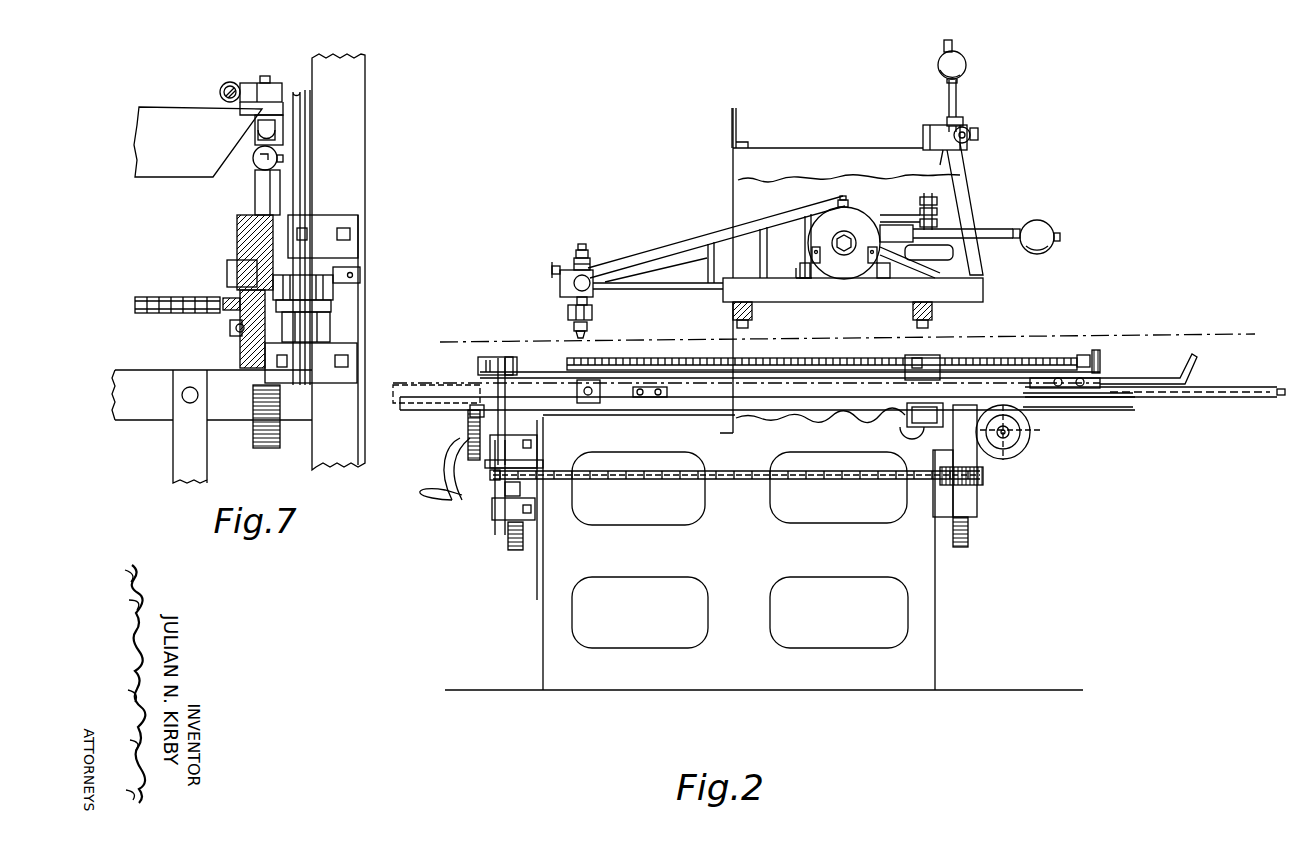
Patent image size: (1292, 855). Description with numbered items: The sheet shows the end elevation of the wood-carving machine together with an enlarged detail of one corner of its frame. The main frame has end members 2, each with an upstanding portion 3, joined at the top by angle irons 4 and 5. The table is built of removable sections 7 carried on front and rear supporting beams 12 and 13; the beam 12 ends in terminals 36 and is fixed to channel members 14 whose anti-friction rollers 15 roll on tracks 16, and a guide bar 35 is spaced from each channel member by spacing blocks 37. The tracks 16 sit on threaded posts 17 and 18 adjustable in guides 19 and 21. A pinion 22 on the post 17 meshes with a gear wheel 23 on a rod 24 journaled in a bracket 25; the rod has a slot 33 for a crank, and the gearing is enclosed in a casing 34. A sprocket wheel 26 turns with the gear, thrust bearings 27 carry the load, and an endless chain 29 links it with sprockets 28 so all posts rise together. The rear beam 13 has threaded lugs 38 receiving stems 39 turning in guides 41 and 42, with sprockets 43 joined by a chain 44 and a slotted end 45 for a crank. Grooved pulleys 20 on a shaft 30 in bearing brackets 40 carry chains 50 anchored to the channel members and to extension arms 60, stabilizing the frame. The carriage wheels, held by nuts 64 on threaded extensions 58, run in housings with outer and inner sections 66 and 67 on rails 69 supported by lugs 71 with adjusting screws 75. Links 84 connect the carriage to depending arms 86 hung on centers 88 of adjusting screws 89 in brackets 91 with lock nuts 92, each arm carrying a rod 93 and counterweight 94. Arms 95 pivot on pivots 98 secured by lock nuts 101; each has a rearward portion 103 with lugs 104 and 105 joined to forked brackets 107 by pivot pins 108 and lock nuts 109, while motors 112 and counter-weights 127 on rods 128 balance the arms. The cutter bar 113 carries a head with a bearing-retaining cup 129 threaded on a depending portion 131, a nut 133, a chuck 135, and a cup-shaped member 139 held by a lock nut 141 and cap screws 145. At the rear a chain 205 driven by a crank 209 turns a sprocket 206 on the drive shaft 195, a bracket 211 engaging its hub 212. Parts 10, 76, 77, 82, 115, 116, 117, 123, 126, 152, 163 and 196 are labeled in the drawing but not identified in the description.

In FIG. 7, the end member 2 is at (353, 167).
In FIG. 2, the end member 2 is at (922, 565).
In FIG. 2, the upstanding portion 3 is at (730, 182).
In FIG. 2, the angle iron 4 is at (450, 318).
In FIG. 2, the angle iron 5 is at (923, 133).
In FIG. 2, the removable table section 7 is at (474, 359).
In FIG. 2, the bar 10 is at (670, 394).
In FIG. 7, the front supporting beam 12 is at (177, 167).
In FIG. 2, the front supporting beam 12 is at (487, 417).
In FIG. 2, the rear supporting beam 13 is at (907, 420).
In FIG. 7, the channel member 14 is at (280, 127).
In FIG. 2, the channel member 14 is at (557, 383).
In FIG. 7, the anti-friction roller 15 is at (258, 133).
In FIG. 2, the anti-friction roller 15 is at (553, 398).
In FIG. 7, the track 16 is at (257, 160).
In FIG. 7, the post 17 is at (257, 190).
In FIG. 2, the post 17 is at (508, 543).
In FIG. 2, the post 18 is at (968, 542).
In FIG. 7, the guide 19 is at (238, 240).
In FIG. 2, the guide 19 is at (540, 517).
In FIG. 2, the grooved wheel 20 is at (1025, 453).
In FIG. 2, the guide 21 is at (970, 447).
In FIG. 7, the pinion 22 is at (227, 285).
In FIG. 7, the gear wheel 23 is at (323, 283).
In FIG. 7, the rod 24 is at (308, 312).
In FIG. 2, the rod 24 is at (498, 487).
In FIG. 7, the bracket 25 is at (327, 225).
In FIG. 2, the bracket 25 is at (503, 443).
In FIG. 7, the sprocket wheel 26 is at (238, 305).
In FIG. 2, the sprocket wheel 26 is at (495, 474).
In FIG. 7, the thrust bearing 27 is at (236, 329).
In FIG. 2, the thrust bearing 27 is at (523, 485).
In FIG. 2, the sprocket 28 is at (980, 475).
In FIG. 7, the endless chain 29 is at (137, 310).
In FIG. 2, the endless chain 29 is at (838, 480).
In FIG. 2, the shaft 30 is at (1012, 433).
In FIG. 7, the slot 33 is at (307, 97).
In FIG. 7, the casing 34 is at (337, 270).
In FIG. 2, the casing 34 is at (513, 463).
In FIG. 7, the guide bar 35 is at (272, 97).
In FIG. 2, the guide bar 35 is at (633, 369).
In FIG. 7, the terminal 36 is at (262, 110).
In FIG. 2, the terminal 36 is at (507, 380).
In FIG. 2, the spacing block 37 is at (1088, 372).
In FIG. 2, the threaded lug 38 is at (940, 360).
In FIG. 2, the threaded rod 39 is at (1012, 362).
In FIG. 2, the bearing bracket 40 is at (1010, 427).
In FIG. 7, the guide 41 is at (237, 84).
In FIG. 2, the guide 41 is at (510, 363).
In FIG. 2, the guide 42 is at (1080, 353).
In FIG. 2, the sprocket 43 is at (1100, 365).
In FIG. 2, the chain 44 is at (1100, 353).
In FIG. 7, the slotted end 45 is at (228, 81).
In FIG. 2, the slotted end 45 is at (480, 368).
In FIG. 2, the chain 50 is at (1170, 398).
In FIG. 2, the threaded extension 58 is at (845, 253).
In FIG. 2, the extension arm 60 is at (1197, 388).
In FIG. 2, the nut 64 is at (848, 237).
In FIG. 2, the outer housing section 66 is at (771, 233).
In FIG. 2, the inner housing section 67 is at (777, 243).
In FIG. 2, the rail 69 is at (740, 292).
In FIG. 2, the lug 71 is at (733, 305).
In FIG. 2, the adjusting screw 75 is at (745, 328).
In FIG. 2, the plate 76 is at (803, 273).
In FIG. 2, the bracket 77 is at (817, 253).
In FIG. 2, the plate 82 is at (812, 273).
In FIG. 2, the link 84 is at (940, 270).
In FIG. 2, the arm 86 is at (972, 155).
In FIG. 2, the center 88 is at (945, 153).
In FIG. 2, the adjusting screw 89 is at (963, 130).
In FIG. 2, the bracket 91 is at (943, 127).
In FIG. 2, the lock nut 92 is at (977, 132).
In FIG. 2, the rod 93 is at (962, 107).
In FIG. 2, the counterweight 94 is at (937, 65).
In FIG. 2, the arm 95 is at (717, 242).
In FIG. 2, the pivot 98 is at (843, 203).
In FIG. 2, the lock nut 101 is at (840, 200).
In FIG. 2, the rearwardly extending portion 103 is at (915, 203).
In FIG. 2, the lug 104 is at (913, 232).
In FIG. 2, the lug 105 is at (943, 252).
In FIG. 2, the forked bracket 107 is at (937, 215).
In FIG. 2, the pivot pin 108 is at (933, 197).
In FIG. 2, the lock nut 109 is at (933, 205).
In FIG. 2, the motor 112 is at (947, 248).
In FIG. 2, the cutter bar 113 is at (560, 288).
In FIG. 2, the arm 115 is at (592, 267).
In FIG. 2, the brace 116 is at (659, 262).
In FIG. 2, the arm 117 is at (597, 273).
In FIG. 2, the housing 123 is at (563, 283).
In FIG. 2, the arm 126 is at (607, 280).
In FIG. 2, the counter-weight 127 is at (1047, 232).
In FIG. 2, the rod 128 is at (980, 230).
In FIG. 2, the bearing-retaining cup 129 is at (572, 313).
In FIG. 2, the depending portion 131 is at (592, 307).
In FIG. 2, the nut 133 is at (592, 317).
In FIG. 2, the chuck 135 is at (588, 335).
In FIG. 2, the cup-shaped member 139 is at (588, 262).
In FIG. 2, the lock nut 141 is at (583, 253).
In FIG. 2, the cap screw 145 is at (577, 258).
In FIG. 2, the lever 152 is at (565, 270).
In FIG. 2, the lever 163 is at (557, 270).
In FIG. 2, the drive shaft 195 is at (808, 413).
In FIG. 2, the arc 196 is at (920, 432).
In FIG. 2, the chain 205 is at (473, 430).
In FIG. 2, the sprocket 206 is at (463, 455).
In FIG. 2, the crank 209 is at (453, 465).
In FIG. 2, the bracket 211 is at (412, 428).
In FIG. 2, the hub 212 is at (463, 403).